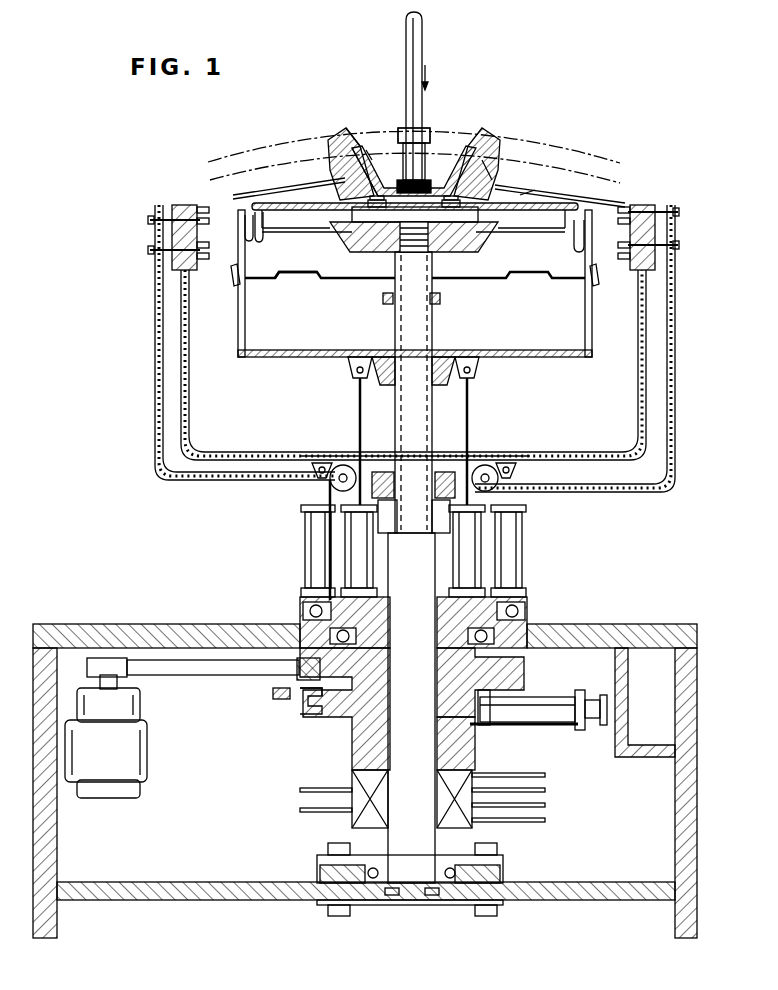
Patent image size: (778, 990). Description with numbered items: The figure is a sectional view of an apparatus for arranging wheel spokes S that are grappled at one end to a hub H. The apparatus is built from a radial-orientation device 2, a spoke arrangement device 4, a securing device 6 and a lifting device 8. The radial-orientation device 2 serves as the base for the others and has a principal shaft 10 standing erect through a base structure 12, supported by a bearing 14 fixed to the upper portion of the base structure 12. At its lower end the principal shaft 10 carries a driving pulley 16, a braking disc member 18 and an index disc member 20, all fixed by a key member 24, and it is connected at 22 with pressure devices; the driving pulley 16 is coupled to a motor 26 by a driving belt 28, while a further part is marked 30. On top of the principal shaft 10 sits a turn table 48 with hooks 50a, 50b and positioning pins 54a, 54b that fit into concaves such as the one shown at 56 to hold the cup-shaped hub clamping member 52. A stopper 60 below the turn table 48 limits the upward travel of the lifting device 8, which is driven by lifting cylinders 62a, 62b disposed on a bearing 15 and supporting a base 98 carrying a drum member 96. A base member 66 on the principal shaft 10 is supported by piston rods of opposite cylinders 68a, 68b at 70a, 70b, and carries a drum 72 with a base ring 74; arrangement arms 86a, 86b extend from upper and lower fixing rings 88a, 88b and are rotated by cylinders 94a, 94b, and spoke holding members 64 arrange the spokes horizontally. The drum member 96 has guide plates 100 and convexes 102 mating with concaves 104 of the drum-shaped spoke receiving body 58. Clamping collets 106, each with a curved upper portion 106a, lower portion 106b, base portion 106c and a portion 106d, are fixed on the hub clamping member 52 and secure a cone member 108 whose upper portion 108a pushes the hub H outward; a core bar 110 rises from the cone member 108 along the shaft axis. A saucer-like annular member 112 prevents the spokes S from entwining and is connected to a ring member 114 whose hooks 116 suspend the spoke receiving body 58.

The radial-orientation device 2 is at (292, 726).
The spoke arrangement device 4 is at (153, 485).
The securing device 6 is at (368, 148).
The lifting device 8 is at (473, 417).
The principal shaft 10 is at (402, 438).
The base structure 12 is at (688, 708).
The bearing 14 is at (490, 636).
The bearing 15 is at (312, 611).
The driving pulley 16 is at (520, 668).
The braking disc member 18 is at (535, 720).
The index disc member 20 is at (508, 714).
The connection to pressure devices 22 is at (550, 770).
The key member 24 is at (392, 737).
The motor 26 is at (140, 752).
The driving belt 28 is at (195, 668).
The stop block 30 is at (272, 696).
The turn table 48 is at (458, 237).
The hook 50a is at (317, 228).
The hook 50b is at (507, 220).
The hub clamping member 52 is at (490, 180).
The positioning pin 54a is at (315, 258).
The positioning pin 54b is at (487, 238).
The concave 56 is at (350, 237).
The spoke receiving body 58 is at (240, 215).
The stopper 60 is at (440, 302).
The lifting cylinder 62a is at (357, 563).
The lifting cylinder 62b is at (475, 568).
The spoke holding member 64 is at (622, 208).
The base member 66 is at (462, 453).
The cylinder 68a is at (317, 552).
The cylinder 68b is at (513, 553).
The piston rod connection 70a is at (314, 466).
The piston rod connection 70b is at (513, 472).
The drum 72 is at (187, 425).
The base ring 74 is at (178, 267).
The arrangement arm 86a is at (155, 412).
The arrangement arm 86b is at (668, 414).
The upper fixing ring 88a is at (367, 457).
The lower fixing ring 88b is at (347, 507).
The cylinder 94a is at (328, 489).
The cylinder 94b is at (496, 466).
The drum member 96 is at (587, 338).
The base 98 is at (452, 378).
The guide plate 100 is at (232, 272).
The convex 102 is at (298, 282).
The concave 104 is at (290, 275).
The clamping collet 106 is at (460, 143).
The outwardly curved upper portion 106a is at (347, 133).
The lower portion 106b is at (337, 160).
The base portion 106c is at (337, 177).
The cup 106d is at (343, 143).
The cone member 108 is at (452, 140).
The inwardly extended upper portion 108a is at (372, 140).
The core bar 110 is at (414, 44).
The annular member 112 is at (528, 193).
The ring member 114 is at (263, 218).
The hook 116 is at (250, 240).
The hub H is at (436, 140).
The spokes S is at (623, 170).